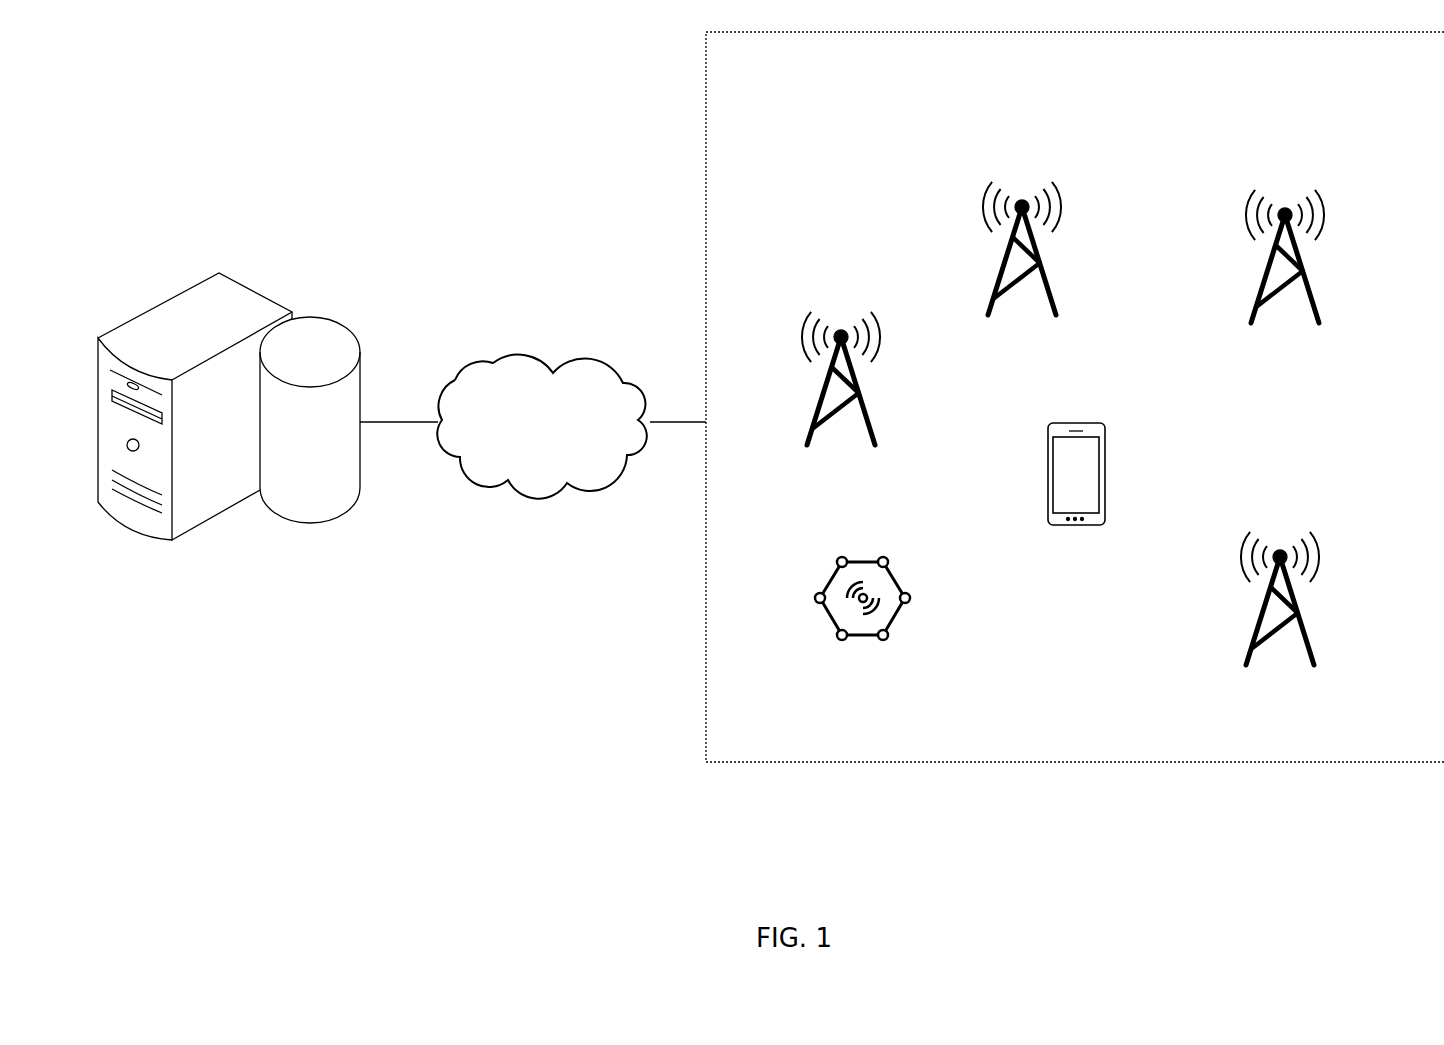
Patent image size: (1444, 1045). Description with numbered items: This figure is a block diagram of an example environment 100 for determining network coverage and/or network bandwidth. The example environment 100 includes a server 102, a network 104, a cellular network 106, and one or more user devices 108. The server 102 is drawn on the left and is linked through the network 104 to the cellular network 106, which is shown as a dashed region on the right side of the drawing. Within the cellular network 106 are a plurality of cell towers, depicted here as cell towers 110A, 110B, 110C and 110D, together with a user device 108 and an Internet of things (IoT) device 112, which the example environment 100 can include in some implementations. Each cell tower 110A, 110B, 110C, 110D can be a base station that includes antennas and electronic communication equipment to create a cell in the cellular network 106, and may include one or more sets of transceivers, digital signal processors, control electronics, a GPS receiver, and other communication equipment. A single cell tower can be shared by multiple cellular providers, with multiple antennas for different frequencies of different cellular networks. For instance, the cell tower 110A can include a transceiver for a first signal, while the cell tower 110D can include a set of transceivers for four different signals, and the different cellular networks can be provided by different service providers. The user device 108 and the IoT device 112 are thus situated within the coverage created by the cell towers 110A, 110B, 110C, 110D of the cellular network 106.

The example environment 100 is at (305, 80).
The server 102 is at (156, 237).
The network 104 is at (564, 452).
The cellular network 106 is at (1213, 87).
The user device 108 is at (1061, 423).
The cell tower 110A is at (850, 294).
The cell tower 110B is at (1032, 165).
The cell tower 110C is at (1295, 175).
The cell tower 110D is at (1292, 517).
The Internet of things (IoT) device 112 is at (965, 689).